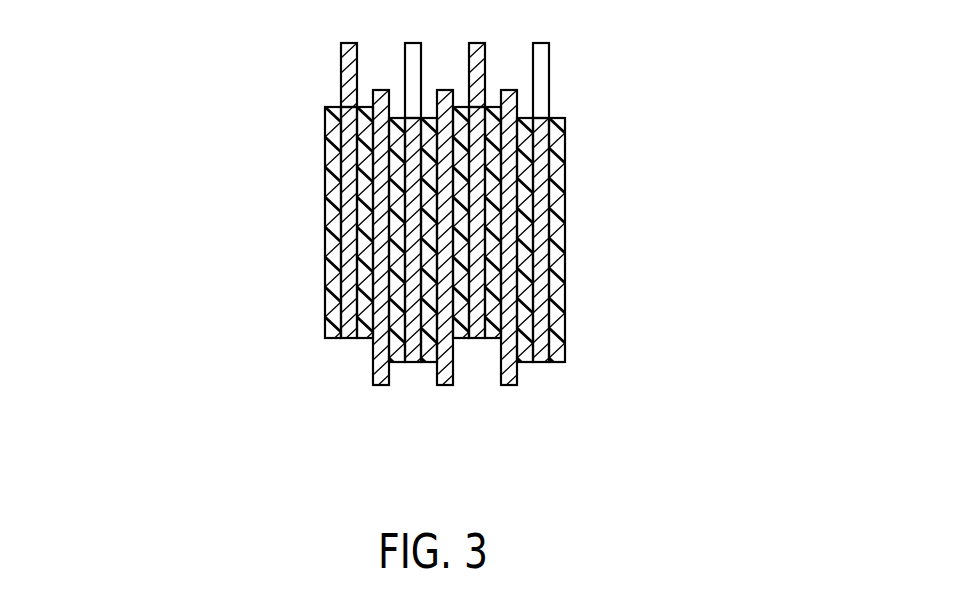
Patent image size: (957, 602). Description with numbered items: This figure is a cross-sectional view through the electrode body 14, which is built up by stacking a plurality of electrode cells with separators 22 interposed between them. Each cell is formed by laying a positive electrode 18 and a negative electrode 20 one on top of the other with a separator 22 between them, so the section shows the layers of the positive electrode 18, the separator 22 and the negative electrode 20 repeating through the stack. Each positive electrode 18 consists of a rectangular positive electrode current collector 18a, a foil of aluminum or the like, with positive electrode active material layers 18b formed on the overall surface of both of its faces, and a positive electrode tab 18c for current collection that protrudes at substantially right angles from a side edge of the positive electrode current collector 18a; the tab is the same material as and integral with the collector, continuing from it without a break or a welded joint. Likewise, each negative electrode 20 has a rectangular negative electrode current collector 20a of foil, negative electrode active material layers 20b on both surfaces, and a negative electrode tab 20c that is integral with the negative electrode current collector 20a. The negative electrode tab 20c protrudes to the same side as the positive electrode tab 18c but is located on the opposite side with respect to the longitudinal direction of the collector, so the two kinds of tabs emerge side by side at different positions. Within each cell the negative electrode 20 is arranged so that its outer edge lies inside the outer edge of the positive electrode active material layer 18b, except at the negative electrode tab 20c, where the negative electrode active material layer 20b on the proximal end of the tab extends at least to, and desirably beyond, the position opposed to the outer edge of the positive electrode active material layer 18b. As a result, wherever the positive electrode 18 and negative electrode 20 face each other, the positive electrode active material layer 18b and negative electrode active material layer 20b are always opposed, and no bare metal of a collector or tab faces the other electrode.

The electrode body 14 is at (438, 248).
The positive electrode 18 is at (493, 248).
The positive electrode current collector 18a is at (541, 233).
The positive electrode active material layer 18b is at (557, 194).
The positive electrode tab 18c is at (415, 47).
The negative electrode 20 is at (394, 241).
The negative electrode current collector 20a is at (349, 233).
The negative electrode active material layer 20b is at (333, 192).
The negative electrode tab 20c is at (352, 47).
The separator 22 is at (382, 93).